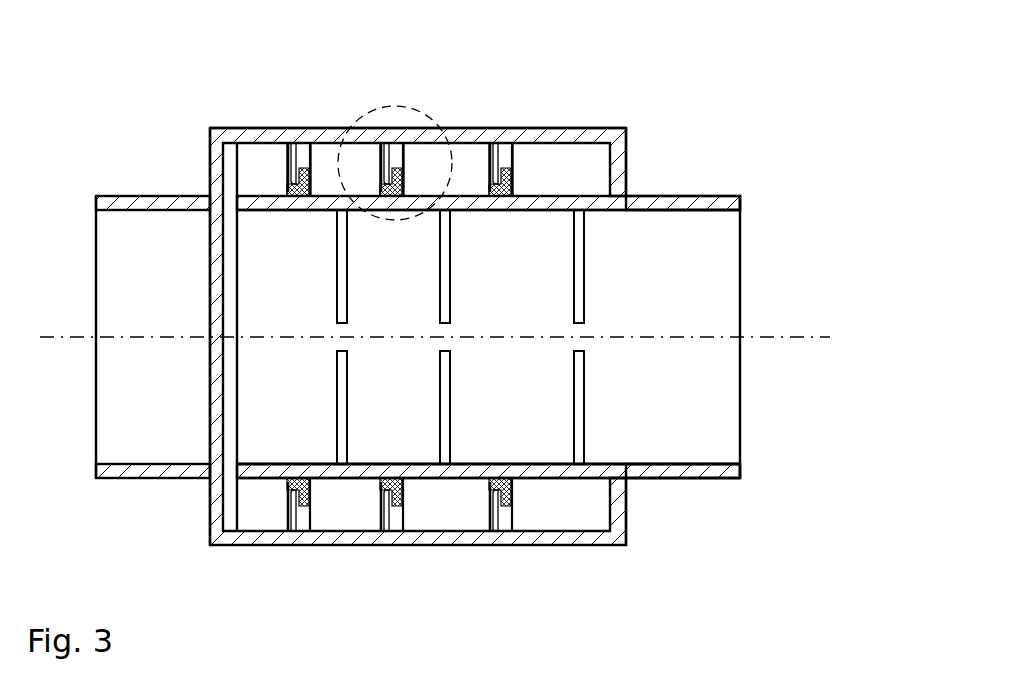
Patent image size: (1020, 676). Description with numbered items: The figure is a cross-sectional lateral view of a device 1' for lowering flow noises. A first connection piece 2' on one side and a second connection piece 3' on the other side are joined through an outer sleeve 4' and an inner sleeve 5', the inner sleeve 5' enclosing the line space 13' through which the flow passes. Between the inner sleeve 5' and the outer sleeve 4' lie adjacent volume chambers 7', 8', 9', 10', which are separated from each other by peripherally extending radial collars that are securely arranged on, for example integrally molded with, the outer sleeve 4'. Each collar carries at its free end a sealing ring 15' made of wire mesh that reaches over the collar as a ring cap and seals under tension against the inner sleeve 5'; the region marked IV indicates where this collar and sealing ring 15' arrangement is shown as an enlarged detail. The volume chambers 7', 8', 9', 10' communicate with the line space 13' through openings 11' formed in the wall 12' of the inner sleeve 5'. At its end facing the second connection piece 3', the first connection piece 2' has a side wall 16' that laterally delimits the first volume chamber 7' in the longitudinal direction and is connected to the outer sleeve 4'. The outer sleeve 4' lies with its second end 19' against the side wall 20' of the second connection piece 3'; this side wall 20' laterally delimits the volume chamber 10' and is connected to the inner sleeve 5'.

The device 1' is at (510, 338).
The first connection piece 2' is at (510, 338).
The second connection piece 3' is at (726, 290).
The outer sleeve 4' is at (510, 338).
The inner sleeve 5' is at (488, 566).
The first volume chamber 7' is at (247, 389).
The volume chamber 8' is at (345, 389).
The volume chamber 9' is at (446, 389).
The volume chamber 10' is at (561, 389).
The openings 11' is at (617, 309).
The wall 12' is at (510, 338).
The line space 13' is at (569, 337).
The sealing ring 15' is at (433, 302).
The side wall 16' is at (173, 289).
The second end 19' is at (435, 91).
The side wall 20' is at (674, 302).
The detail IV is at (421, 108).